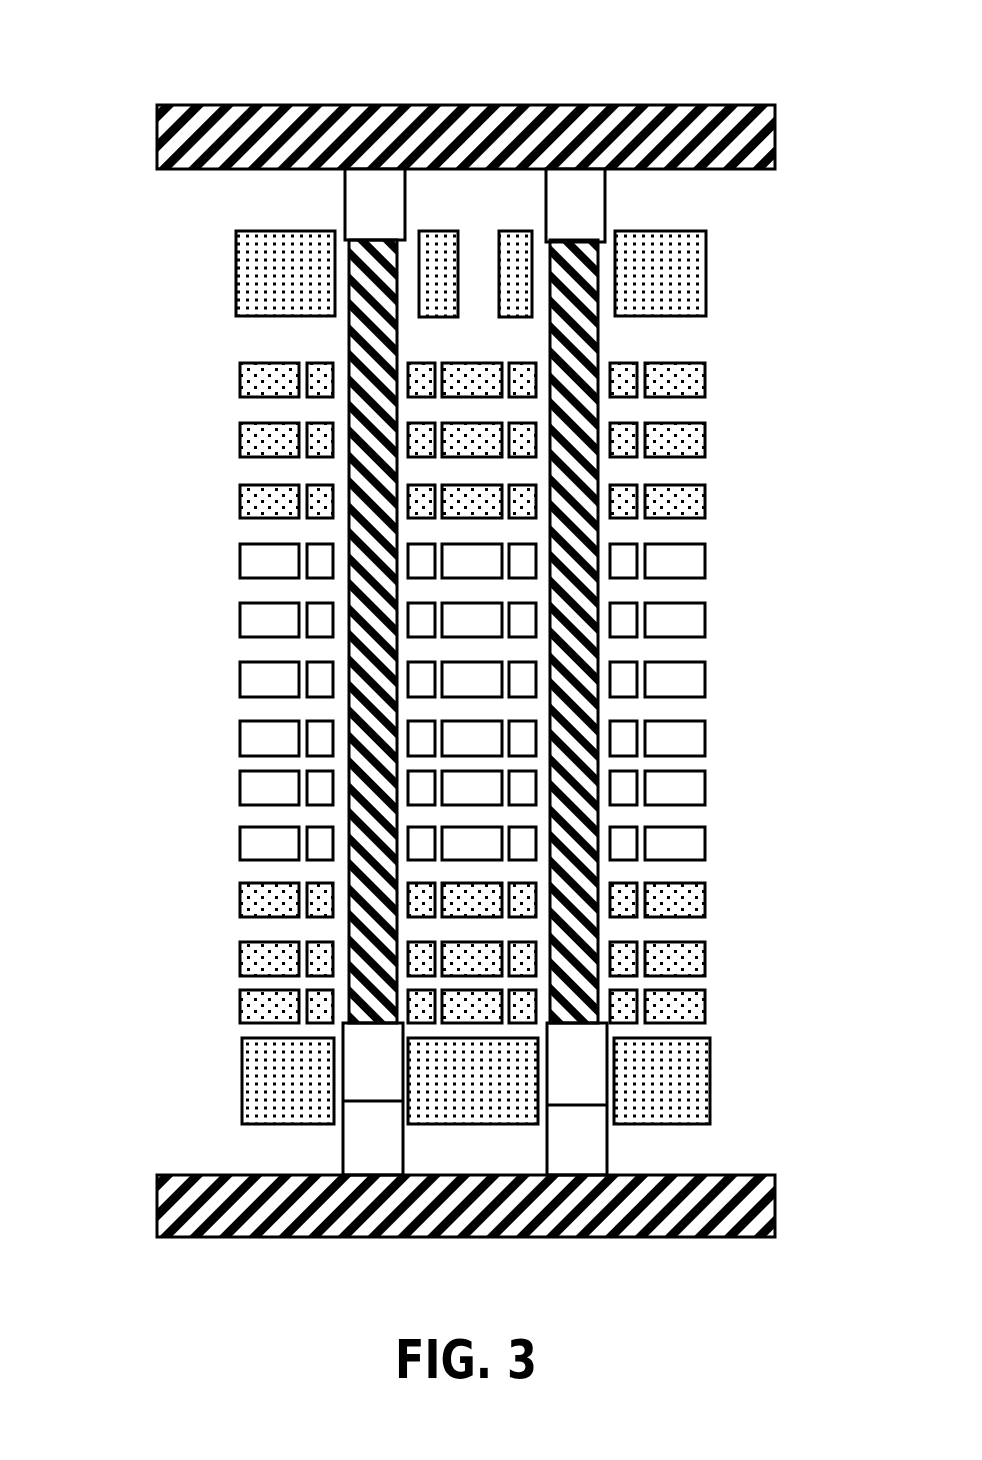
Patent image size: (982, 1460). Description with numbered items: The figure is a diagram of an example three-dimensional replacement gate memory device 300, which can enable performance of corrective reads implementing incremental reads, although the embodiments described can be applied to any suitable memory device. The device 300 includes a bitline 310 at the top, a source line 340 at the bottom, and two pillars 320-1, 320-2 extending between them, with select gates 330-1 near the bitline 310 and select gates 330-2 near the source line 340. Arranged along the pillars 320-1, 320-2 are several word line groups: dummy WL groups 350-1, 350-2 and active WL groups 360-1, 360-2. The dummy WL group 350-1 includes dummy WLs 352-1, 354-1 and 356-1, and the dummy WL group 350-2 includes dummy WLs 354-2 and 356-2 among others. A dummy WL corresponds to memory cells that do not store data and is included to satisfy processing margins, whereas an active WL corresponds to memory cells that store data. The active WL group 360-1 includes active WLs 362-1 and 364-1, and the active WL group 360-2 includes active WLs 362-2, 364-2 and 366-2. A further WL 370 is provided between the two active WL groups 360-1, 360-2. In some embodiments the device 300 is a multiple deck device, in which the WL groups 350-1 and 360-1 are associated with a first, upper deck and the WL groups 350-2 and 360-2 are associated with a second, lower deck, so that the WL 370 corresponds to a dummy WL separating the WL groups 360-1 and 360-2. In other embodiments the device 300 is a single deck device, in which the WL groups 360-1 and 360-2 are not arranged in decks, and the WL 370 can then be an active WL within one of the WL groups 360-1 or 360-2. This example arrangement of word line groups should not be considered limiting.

The three-dimensional replacement gate memory device 300 is at (92, 64).
The bitline 310 is at (775, 140).
The pillar 320-1 is at (349, 338).
The pillar 320-2 is at (598, 328).
The select gate 330-1 is at (706, 272).
The select gate 330-2 is at (710, 1075).
The source line 340 is at (775, 1208).
The dummy WL group 350-1 is at (456, 429).
The dummy WL group 350-2 is at (457, 953).
The dummy WL 352-1 is at (705, 501).
The dummy WL 354-1 is at (705, 440).
The dummy WL 354-2 is at (705, 959).
The dummy WL 356-1 is at (705, 380).
The dummy WL 356-2 is at (705, 1006).
The active WL group 360-1 is at (456, 576).
The active WL group 360-2 is at (457, 801).
The active WL 362-1 is at (705, 561).
The active WL 362-2 is at (705, 738).
The active WL 364-1 is at (705, 620).
The active WL 364-2 is at (705, 788).
The active WL 366-2 is at (705, 843).
The WL 370 is at (240, 668).